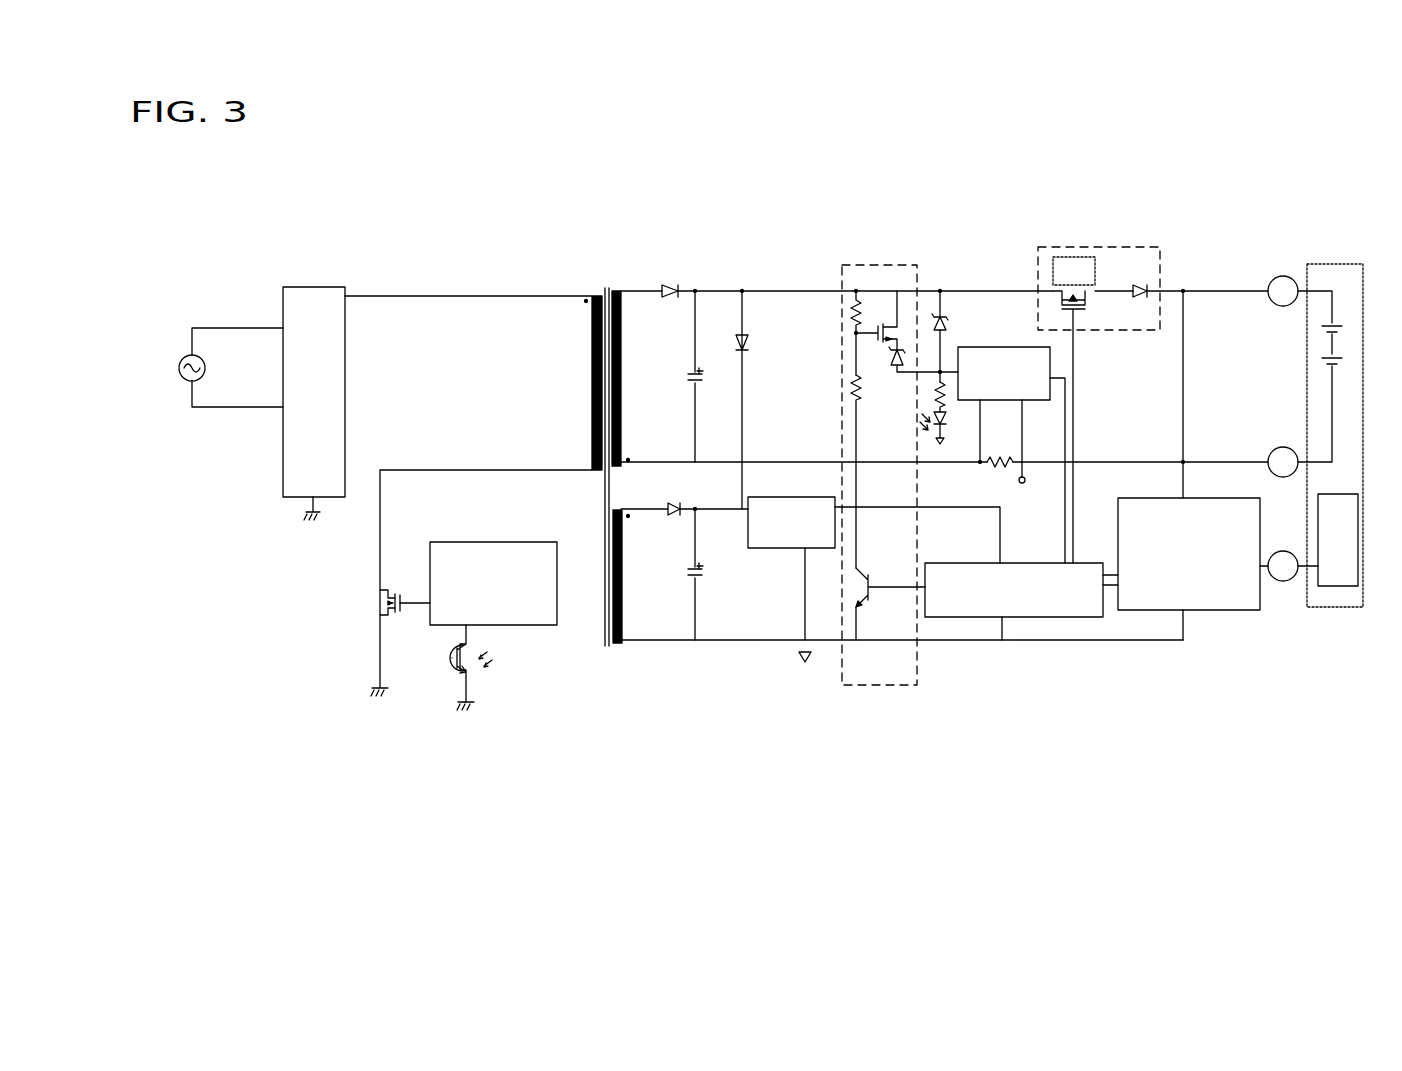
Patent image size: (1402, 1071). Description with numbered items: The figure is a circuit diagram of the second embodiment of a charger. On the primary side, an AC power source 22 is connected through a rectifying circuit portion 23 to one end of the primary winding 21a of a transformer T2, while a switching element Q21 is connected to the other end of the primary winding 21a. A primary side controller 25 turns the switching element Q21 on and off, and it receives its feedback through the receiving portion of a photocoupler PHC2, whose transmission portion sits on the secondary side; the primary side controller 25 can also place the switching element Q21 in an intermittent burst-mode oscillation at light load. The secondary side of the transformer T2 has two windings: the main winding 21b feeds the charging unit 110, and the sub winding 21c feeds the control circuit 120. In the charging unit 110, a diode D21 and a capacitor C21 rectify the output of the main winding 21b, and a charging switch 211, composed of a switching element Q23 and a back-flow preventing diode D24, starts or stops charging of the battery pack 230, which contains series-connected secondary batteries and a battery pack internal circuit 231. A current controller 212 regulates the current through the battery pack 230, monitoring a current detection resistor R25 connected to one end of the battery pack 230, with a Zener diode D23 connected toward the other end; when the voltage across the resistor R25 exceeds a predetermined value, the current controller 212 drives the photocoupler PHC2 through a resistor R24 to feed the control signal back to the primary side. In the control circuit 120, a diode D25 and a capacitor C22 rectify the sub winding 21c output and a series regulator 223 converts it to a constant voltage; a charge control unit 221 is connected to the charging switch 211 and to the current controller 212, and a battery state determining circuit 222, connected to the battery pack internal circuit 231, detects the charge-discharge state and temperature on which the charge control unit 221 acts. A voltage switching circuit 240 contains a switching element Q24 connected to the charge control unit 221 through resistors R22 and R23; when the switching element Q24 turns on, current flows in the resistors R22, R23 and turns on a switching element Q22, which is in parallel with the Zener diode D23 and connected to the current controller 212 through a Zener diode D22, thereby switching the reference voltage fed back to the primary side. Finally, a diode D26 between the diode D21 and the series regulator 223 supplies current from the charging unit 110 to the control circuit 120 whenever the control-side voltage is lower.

The AC power source 22 is at (186, 357).
The rectifying circuit portion 23 is at (320, 287).
The primary side controller 25 is at (466, 542).
The transformer T2 is at (613, 293).
The primary winding 21a is at (590, 362).
The main winding 21b is at (623, 320).
The sub winding 21c is at (621, 605).
The switching element Q21 is at (326, 592).
The photocoupler PHC2 is at (484, 667).
The charging unit 110 is at (808, 212).
The control circuit 120 is at (722, 712).
The voltage switching circuit 240 is at (892, 255).
The charging switch 211 is at (1085, 247).
The current controller 212 is at (985, 347).
The charge control unit 221 is at (1090, 560).
The battery state determining circuit 222 is at (1240, 492).
The series regulator 223 is at (785, 497).
The battery pack 230 is at (1345, 252).
The battery pack internal circuit 231 is at (1340, 586).
The diode D21 is at (673, 282).
The Zener diode D22 is at (908, 360).
The Zener diode D23 is at (958, 336).
The diode D24 is at (1137, 303).
The diode D25 is at (684, 499).
The diode D26 is at (761, 400).
The capacitor C21 is at (711, 376).
The capacitor C22 is at (712, 574).
The resistor R22 is at (831, 333).
The resistor R23 is at (831, 471).
The resistor R24 is at (912, 397).
The current detection resistor R25 is at (1000, 475).
The switching element Q22 is at (876, 320).
The switching element Q23 is at (1074, 410).
The switching element Q24 is at (890, 602).